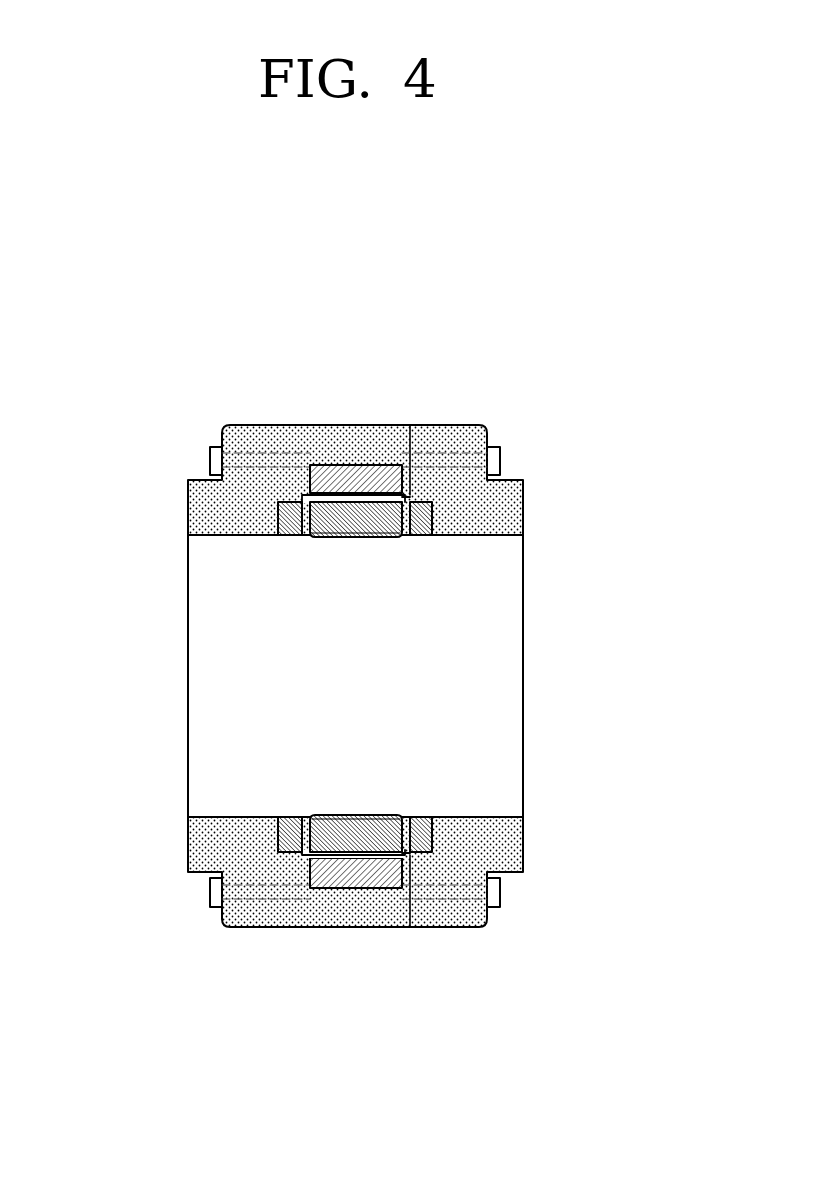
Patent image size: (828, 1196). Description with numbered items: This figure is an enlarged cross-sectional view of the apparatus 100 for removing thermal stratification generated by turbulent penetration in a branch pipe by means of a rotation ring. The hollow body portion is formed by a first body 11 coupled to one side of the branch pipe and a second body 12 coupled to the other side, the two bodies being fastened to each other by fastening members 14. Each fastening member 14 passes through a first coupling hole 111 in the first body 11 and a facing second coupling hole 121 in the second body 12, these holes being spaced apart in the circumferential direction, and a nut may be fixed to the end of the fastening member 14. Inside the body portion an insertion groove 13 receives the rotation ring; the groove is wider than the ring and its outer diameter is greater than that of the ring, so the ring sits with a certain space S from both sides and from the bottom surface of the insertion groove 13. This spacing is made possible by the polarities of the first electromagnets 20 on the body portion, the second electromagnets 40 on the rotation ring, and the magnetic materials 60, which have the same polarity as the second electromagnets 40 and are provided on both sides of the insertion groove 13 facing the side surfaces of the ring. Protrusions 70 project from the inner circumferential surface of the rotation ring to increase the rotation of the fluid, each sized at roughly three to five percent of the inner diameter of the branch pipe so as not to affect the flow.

The apparatus for removing thermal stratification 100 is at (512, 412).
The first body 11 is at (288, 433).
The second body 12 is at (467, 437).
The fastening member 14 is at (470, 455).
The first coupling hole 111 is at (243, 455).
The second coupling hole 121 is at (437, 465).
The first electromagnet 20 is at (352, 472).
The insertion groove 13 is at (305, 537).
The magnetic material 60 is at (433, 515).
The protrusion 70 is at (343, 537).
The second electromagnet 40 is at (383, 537).
The gap space S is at (403, 497).